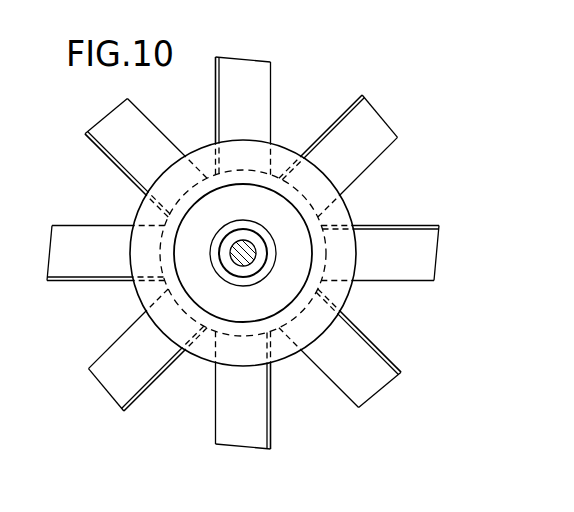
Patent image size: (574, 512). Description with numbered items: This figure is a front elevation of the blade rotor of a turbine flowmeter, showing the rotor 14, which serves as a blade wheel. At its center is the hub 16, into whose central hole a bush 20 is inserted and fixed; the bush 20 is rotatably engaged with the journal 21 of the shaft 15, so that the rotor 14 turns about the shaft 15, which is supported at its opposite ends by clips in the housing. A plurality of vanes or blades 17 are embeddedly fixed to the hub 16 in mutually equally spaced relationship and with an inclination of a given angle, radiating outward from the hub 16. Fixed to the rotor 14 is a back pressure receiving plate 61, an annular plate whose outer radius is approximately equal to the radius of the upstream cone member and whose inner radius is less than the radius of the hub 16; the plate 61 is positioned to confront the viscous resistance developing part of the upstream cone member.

The rotor 14 is at (100, 104).
The shaft 15 is at (252, 262).
The hub 16 is at (180, 247).
The blades 17 is at (147, 123).
The bush 20 is at (218, 236).
The journal 21 is at (259, 243).
The back pressure receiving plate 61 is at (288, 358).